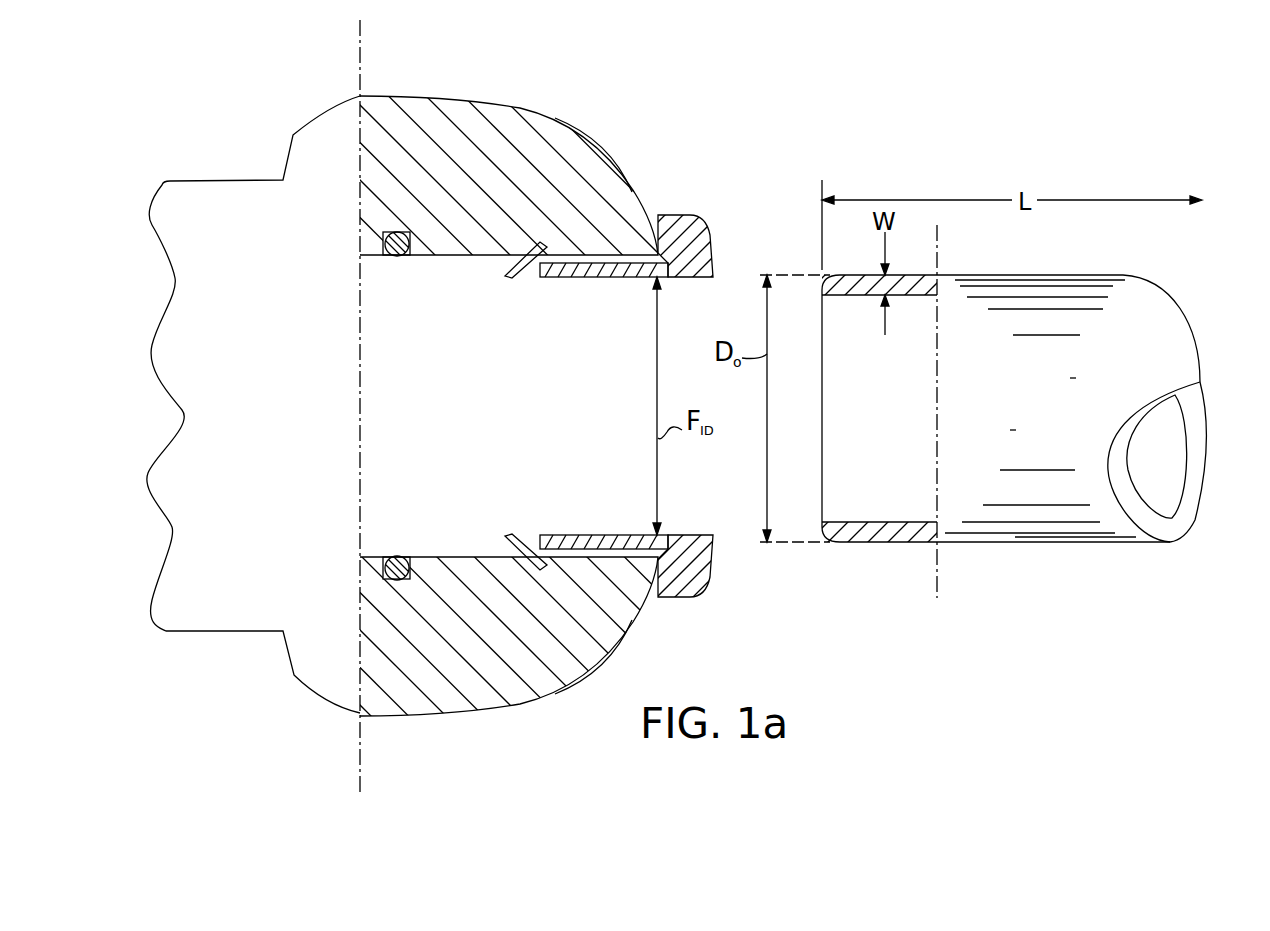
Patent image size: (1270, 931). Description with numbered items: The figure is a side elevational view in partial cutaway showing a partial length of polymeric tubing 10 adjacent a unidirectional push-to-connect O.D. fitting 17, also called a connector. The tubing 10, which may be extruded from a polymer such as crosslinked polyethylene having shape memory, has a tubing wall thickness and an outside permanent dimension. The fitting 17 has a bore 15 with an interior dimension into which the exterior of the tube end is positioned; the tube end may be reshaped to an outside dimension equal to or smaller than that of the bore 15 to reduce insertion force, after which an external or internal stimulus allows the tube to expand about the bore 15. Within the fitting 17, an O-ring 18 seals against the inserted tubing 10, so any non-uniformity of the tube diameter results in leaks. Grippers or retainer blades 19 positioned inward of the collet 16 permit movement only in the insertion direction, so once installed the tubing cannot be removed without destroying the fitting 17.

The tubing 10 is at (1094, 282).
The bore 15 is at (591, 423).
The collet 16 is at (575, 268).
The fitting 17 is at (536, 129).
The O-ring 18 is at (392, 258).
The retainer blades 19 is at (528, 538).